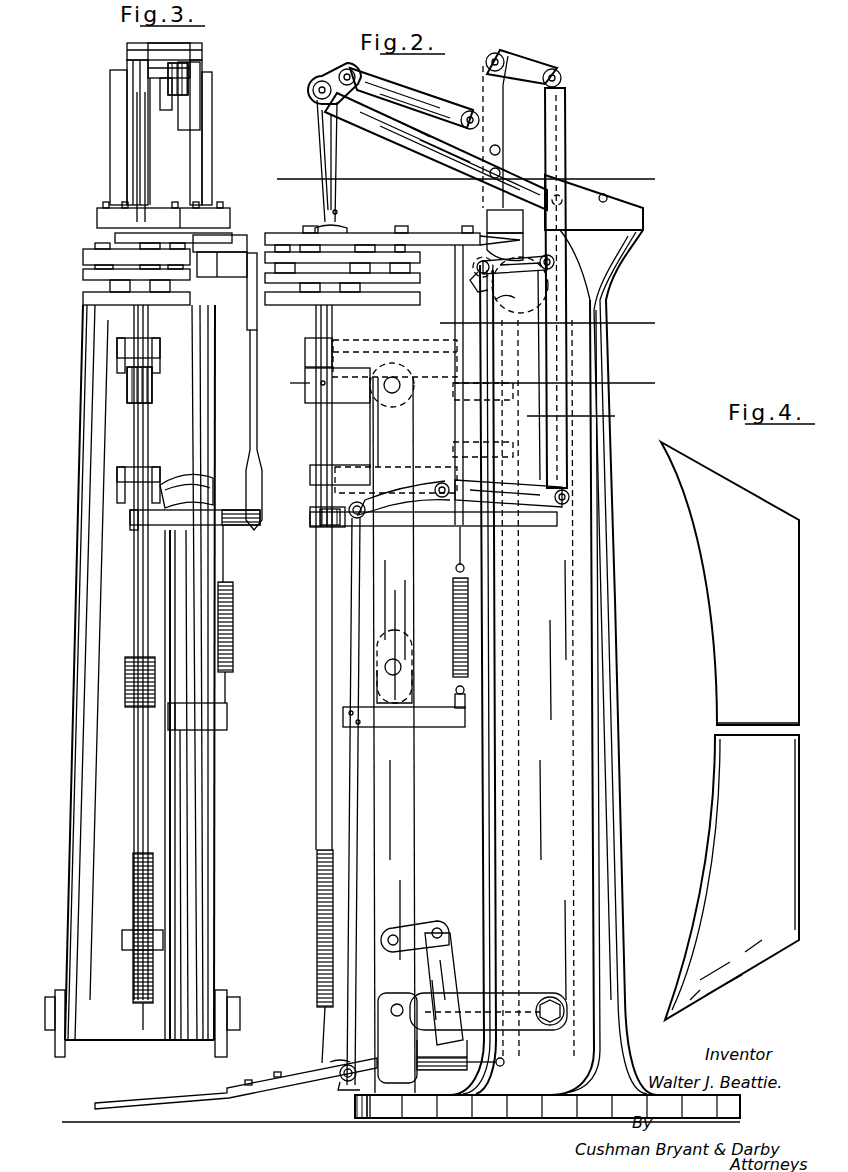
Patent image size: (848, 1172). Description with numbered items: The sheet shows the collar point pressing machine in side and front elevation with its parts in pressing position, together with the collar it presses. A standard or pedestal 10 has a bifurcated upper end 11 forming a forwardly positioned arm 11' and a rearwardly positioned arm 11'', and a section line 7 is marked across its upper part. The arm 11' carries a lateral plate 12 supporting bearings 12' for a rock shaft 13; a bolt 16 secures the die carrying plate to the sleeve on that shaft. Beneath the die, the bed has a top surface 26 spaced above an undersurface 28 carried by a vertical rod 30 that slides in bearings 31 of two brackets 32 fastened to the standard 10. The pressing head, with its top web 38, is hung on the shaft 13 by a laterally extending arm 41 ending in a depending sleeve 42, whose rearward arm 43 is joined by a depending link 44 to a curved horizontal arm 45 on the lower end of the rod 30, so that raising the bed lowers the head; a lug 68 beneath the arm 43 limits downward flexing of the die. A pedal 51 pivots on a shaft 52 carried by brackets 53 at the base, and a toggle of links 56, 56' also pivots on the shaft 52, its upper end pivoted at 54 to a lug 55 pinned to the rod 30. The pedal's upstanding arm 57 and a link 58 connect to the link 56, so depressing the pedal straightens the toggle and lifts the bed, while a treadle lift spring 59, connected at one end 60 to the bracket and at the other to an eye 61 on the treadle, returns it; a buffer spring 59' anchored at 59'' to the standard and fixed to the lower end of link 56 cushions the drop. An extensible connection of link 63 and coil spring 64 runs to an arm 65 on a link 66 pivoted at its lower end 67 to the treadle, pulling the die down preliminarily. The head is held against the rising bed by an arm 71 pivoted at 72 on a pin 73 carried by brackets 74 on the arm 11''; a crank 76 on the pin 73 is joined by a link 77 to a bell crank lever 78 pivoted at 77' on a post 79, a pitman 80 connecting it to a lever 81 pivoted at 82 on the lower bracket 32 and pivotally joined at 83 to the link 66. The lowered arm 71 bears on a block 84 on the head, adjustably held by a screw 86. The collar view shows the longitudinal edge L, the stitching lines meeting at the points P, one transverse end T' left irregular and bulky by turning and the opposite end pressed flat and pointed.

In FIG. 2, the section line / frame head 7 is at (474, 199).
In FIG. 3, the standard 10 is at (195, 905).
In FIG. 2, the frame standard 11 is at (547, 676).
In FIG. 2, the forwardly positioned arm 11' is at (511, 285).
In FIG. 2, the rearwardly positioned arm 11'' is at (616, 265).
In FIG. 3, the plate 12 is at (148, 204).
In FIG. 2, the plate 12 is at (490, 207).
In FIG. 2, the bearings 12' is at (487, 231).
In FIG. 2, the rock shaft 13 is at (486, 260).
In FIG. 2, the bolt 16 is at (469, 412).
In FIG. 3, the top surface 26 is at (90, 278).
In FIG. 2, the top surface 26 is at (292, 250).
In FIG. 3, the undersurface 28 is at (95, 300).
In FIG. 2, the undersurface 28 is at (280, 305).
In FIG. 3, the vertical rod 30 is at (140, 432).
In FIG. 2, the vertical rod 30 is at (318, 420).
In FIG. 3, the bearings 31 is at (130, 348).
In FIG. 2, the bearings 31 is at (305, 345).
In FIG. 3, the brackets 32 is at (118, 360).
In FIG. 2, the brackets 32 is at (360, 340).
In FIG. 3, the top web 38 is at (118, 238).
In FIG. 2, the top web 38 is at (378, 233).
In FIG. 3, the laterally extending arm 41 is at (238, 233).
In FIG. 3, the depending sleeve 42 is at (242, 253).
In FIG. 2, the rearwardly extending arm 43 is at (540, 256).
In FIG. 3, the depending link 44 is at (250, 395).
In FIG. 2, the depending link 44 is at (581, 375).
In FIG. 3, the curved horizontal arm 45 is at (245, 528).
In FIG. 2, the curved horizontal arm 45 is at (530, 528).
In FIG. 3, the pedal 51 is at (185, 1098).
In FIG. 2, the shaft 52 is at (397, 1004).
In FIG. 3, the brackets 53 is at (62, 1048).
In FIG. 2, the brackets 53 is at (488, 1011).
In FIG. 2, the pivot pin 54 is at (400, 388).
In FIG. 3, the lug 55 is at (135, 386).
In FIG. 2, the lug 55 is at (360, 400).
In FIG. 2, the toggle link 56 is at (410, 735).
In FIG. 2, the toggle link 56' is at (410, 628).
In FIG. 2, the upstanding arm 57 is at (445, 955).
In FIG. 2, the link 58 is at (420, 925).
In FIG. 3, the treadle lift spring 59 is at (134, 941).
In FIG. 2, the treadle lift spring 59 is at (307, 956).
In FIG. 2, the buffer spring 59' is at (469, 1052).
In FIG. 2, the anchor 59'' is at (508, 1060).
In FIG. 2, the spring end 60 is at (350, 515).
In FIG. 2, the eye 61 is at (316, 1063).
In FIG. 2, the link 63 is at (455, 310).
In FIG. 3, the coil spring 64 is at (233, 620).
In FIG. 2, the coil spring 64 is at (468, 630).
In FIG. 3, the arm 65 is at (205, 718).
In FIG. 2, the arm 65 is at (440, 727).
In FIG. 3, the link 66 is at (172, 786).
In FIG. 2, the link 66 is at (350, 757).
In FIG. 2, the pivot 67 is at (345, 1085).
In FIG. 3, the lug 68 is at (244, 298).
In FIG. 3, the arm 71 is at (140, 146).
In FIG. 2, the arm 71 is at (320, 150).
In FIG. 2, the pivot 72 is at (312, 98).
In FIG. 2, the pin 73 is at (312, 86).
In FIG. 2, the brackets 74 is at (405, 122).
In FIG. 3, the crank 76 is at (165, 92).
In FIG. 2, the crank 76 is at (342, 68).
In FIG. 3, the link 77 is at (203, 86).
In FIG. 2, the link 77 is at (414, 94).
In FIG. 2, the pivot 77' is at (509, 41).
In FIG. 3, the bell crank lever 78 is at (195, 68).
In FIG. 2, the bell crank lever 78 is at (535, 66).
In FIG. 2, the post 79 is at (505, 130).
In FIG. 3, the pitman 80 is at (212, 162).
In FIG. 2, the pitman 80 is at (565, 135).
In FIG. 3, the lever 81 is at (210, 493).
In FIG. 2, the lever 81 is at (520, 482).
In FIG. 2, the pivot 82 is at (441, 482).
In FIG. 2, the pivotal connection 83 is at (350, 525).
In FIG. 2, the block 84 is at (338, 226).
In FIG. 2, the screw 86 is at (333, 205).
In FIG. 4, the points P is at (668, 442).
In FIG. 4, the longitudinal edge L is at (712, 828).
In FIG. 4, the tip T' is at (728, 971).